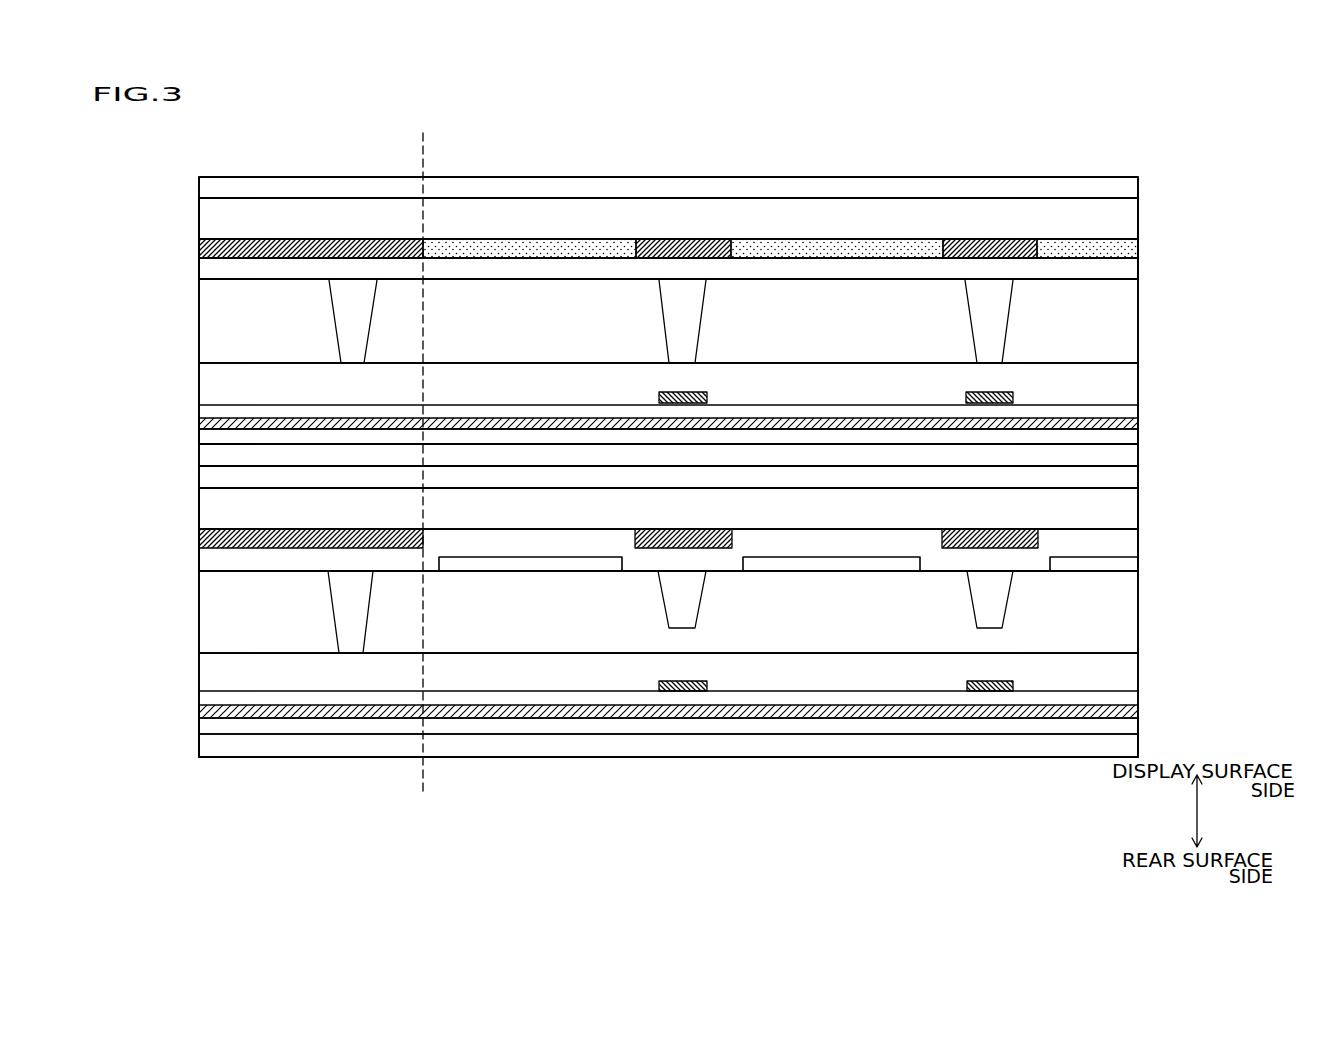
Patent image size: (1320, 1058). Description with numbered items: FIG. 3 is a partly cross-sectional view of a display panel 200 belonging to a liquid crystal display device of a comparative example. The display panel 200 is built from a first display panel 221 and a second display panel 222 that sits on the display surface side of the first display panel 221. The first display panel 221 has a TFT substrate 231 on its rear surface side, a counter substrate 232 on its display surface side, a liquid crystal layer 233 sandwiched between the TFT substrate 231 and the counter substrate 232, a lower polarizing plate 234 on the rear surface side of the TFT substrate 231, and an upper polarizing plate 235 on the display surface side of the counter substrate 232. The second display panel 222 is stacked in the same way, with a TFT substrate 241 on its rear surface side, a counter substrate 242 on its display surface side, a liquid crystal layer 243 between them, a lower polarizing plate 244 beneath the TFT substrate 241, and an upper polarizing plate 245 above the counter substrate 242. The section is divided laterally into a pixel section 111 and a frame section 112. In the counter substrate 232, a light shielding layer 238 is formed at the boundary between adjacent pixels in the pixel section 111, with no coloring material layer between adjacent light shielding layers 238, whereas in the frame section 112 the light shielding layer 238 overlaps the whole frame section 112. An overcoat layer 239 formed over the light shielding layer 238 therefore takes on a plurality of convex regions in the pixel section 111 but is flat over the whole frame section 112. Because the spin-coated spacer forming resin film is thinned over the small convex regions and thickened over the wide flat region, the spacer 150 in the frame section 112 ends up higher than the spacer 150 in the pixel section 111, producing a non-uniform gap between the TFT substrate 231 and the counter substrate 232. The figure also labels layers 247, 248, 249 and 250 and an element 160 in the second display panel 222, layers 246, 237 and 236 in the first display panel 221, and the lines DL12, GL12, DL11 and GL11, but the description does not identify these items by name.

The display panel 200 is at (1139, 147).
The upper polarizing plate 245 is at (1125, 189).
The insulating layer 247 is at (1125, 227).
The color filter 248 is at (687, 240).
The light shielding layer 249 is at (833, 240).
The insulating layer 250 is at (1125, 266).
The counter substrate 242 is at (193, 207).
The liquid crystal layer 243 is at (193, 285).
The spacer 160 is at (333, 312).
The TFT substrate 241 is at (193, 368).
The insulating layer 246 is at (1125, 434).
The lower polarizing plate 244 is at (1125, 452).
The upper polarizing plate 235 is at (1125, 474).
The insulating layer 237 is at (1125, 501).
The overcoat layer 239 is at (1125, 541).
The counter substrate 232 is at (193, 498).
The liquid crystal layer 233 is at (193, 578).
The spacer 150 is at (333, 602).
The TFT substrate 231 is at (193, 660).
The insulating layer 236 is at (1125, 724).
The lower polarizing plate 234 is at (1125, 744).
The light shielding layer 238 is at (635, 540).
The second display panel 222 is at (138, 178).
The first display panel 221 is at (138, 470).
The frame section 112 is at (267, 157).
The pixel section 111 is at (563, 162).
The data line DL12 is at (680, 392).
The gate line GL12 is at (750, 428).
The data line DL11 is at (683, 691).
The gate line GL11 is at (848, 718).